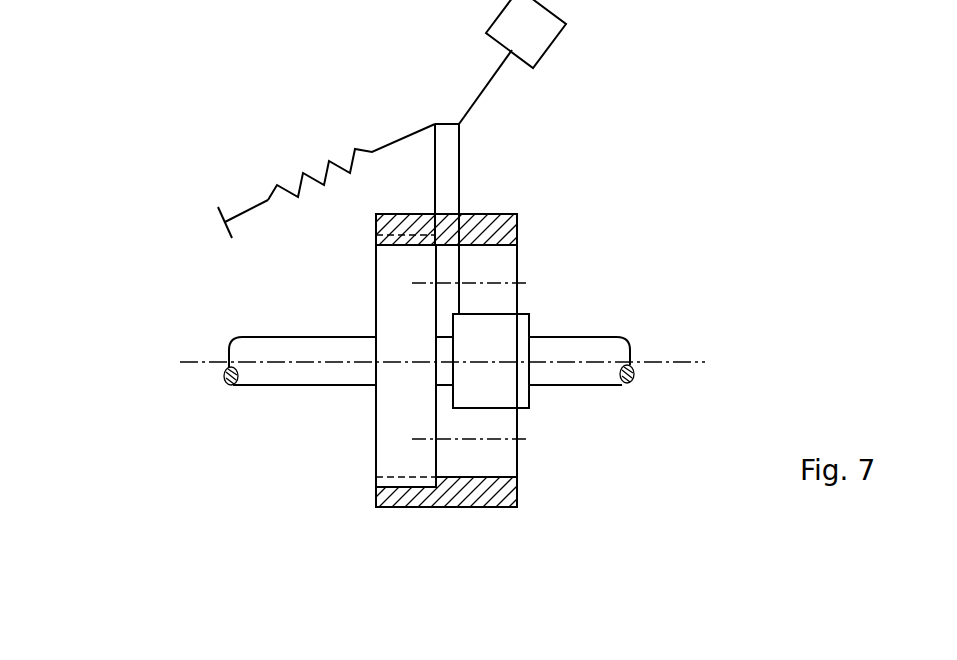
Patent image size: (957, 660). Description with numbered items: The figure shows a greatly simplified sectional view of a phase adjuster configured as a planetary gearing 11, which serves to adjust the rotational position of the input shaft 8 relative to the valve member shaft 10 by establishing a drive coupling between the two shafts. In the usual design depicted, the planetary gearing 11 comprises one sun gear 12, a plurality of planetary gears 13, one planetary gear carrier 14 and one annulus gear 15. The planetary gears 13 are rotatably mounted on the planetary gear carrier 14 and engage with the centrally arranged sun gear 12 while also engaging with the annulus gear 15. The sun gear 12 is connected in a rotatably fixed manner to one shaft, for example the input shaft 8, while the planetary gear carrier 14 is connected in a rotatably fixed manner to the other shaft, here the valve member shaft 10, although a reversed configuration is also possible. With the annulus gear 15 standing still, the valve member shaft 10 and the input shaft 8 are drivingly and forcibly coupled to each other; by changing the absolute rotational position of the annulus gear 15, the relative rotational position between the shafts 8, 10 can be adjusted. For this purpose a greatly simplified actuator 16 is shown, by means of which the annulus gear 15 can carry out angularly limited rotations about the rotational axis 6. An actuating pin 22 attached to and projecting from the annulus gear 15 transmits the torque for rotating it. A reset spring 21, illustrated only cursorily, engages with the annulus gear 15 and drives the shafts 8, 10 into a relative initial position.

The rotational axis 6 is at (675, 358).
The input shaft 8 is at (590, 374).
The valve member shaft 10 is at (280, 372).
The planetary gearing 11 is at (509, 212).
The sun gear 12 is at (524, 330).
The planetary gears 13 is at (522, 285).
The planetary gear carrier 14 is at (387, 428).
The annulus gear 15 is at (455, 497).
The actuator 16 is at (542, 39).
The reset spring 21 is at (298, 180).
The actuating pin 22 is at (444, 124).